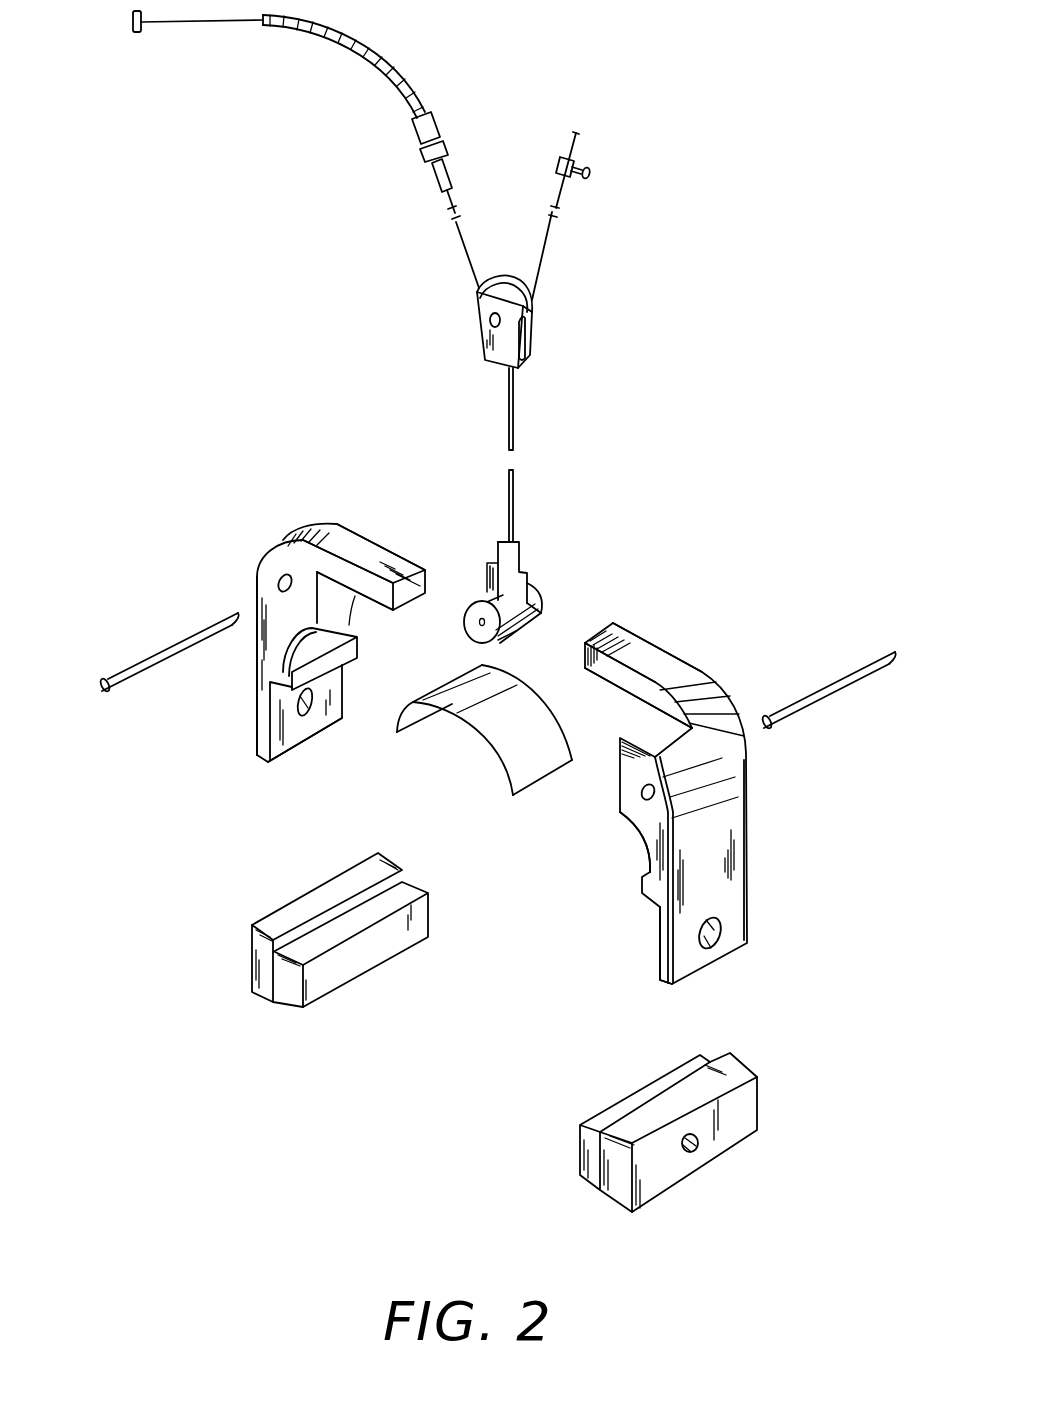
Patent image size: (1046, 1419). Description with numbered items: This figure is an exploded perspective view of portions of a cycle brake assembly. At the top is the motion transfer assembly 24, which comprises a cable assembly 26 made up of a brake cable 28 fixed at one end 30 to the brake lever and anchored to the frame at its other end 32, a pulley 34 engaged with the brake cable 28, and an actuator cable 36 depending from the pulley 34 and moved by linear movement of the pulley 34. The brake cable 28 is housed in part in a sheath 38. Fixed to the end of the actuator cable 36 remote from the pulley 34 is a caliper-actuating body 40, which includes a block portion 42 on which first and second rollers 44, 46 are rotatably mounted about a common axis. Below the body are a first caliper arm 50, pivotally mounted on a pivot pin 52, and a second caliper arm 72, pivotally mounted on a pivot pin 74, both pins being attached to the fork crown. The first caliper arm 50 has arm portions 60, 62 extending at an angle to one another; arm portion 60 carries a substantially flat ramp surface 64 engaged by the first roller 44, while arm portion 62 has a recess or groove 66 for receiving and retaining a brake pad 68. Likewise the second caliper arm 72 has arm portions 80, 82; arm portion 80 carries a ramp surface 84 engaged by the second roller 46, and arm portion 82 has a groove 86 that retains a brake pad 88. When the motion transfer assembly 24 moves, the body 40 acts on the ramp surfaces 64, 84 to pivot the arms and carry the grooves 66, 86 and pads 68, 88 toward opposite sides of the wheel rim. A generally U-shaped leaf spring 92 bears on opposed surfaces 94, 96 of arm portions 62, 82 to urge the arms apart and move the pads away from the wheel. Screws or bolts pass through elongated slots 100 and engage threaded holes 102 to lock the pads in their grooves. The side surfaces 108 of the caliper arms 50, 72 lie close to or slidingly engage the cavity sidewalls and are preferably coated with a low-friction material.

The motion transfer assembly 24 is at (273, 254).
The cable assembly 26 is at (535, 252).
The brake cable 28 is at (203, 23).
The end of brake cable fixed to lever 30 is at (133, 20).
The end of brake cable anchored to frame 32 is at (575, 143).
The pulley 34 is at (567, 322).
The actuator cable 36 is at (513, 495).
The sheath 38 is at (362, 42).
The caliper-actuating body 40 is at (532, 582).
The block portion 42 is at (490, 567).
The first roller 44 is at (485, 592).
The second roller 46 is at (537, 598).
The first caliper arm 50 is at (325, 638).
The pivot pin 52 is at (170, 637).
The arm portion 60 is at (403, 510).
The arm portion 62 is at (257, 652).
The ramp surface 64 is at (375, 614).
The recess or groove 66 is at (287, 728).
The brake pad 68 is at (300, 910).
The second caliper arm 72 is at (693, 796).
The pivot pin 74 is at (843, 670).
The arm portion 80 is at (640, 650).
The arm portion 82 is at (725, 889).
The ramp surface 84 is at (612, 687).
The recess or groove 86 is at (660, 938).
The brake pad 88 is at (691, 1127).
The leaf spring 92 is at (510, 753).
The surface 94 is at (333, 633).
The surface 96 is at (632, 830).
The elongated holes or slots 100 is at (305, 702).
The threaded holes 102 is at (692, 1148).
The side surfaces 108 is at (273, 602).